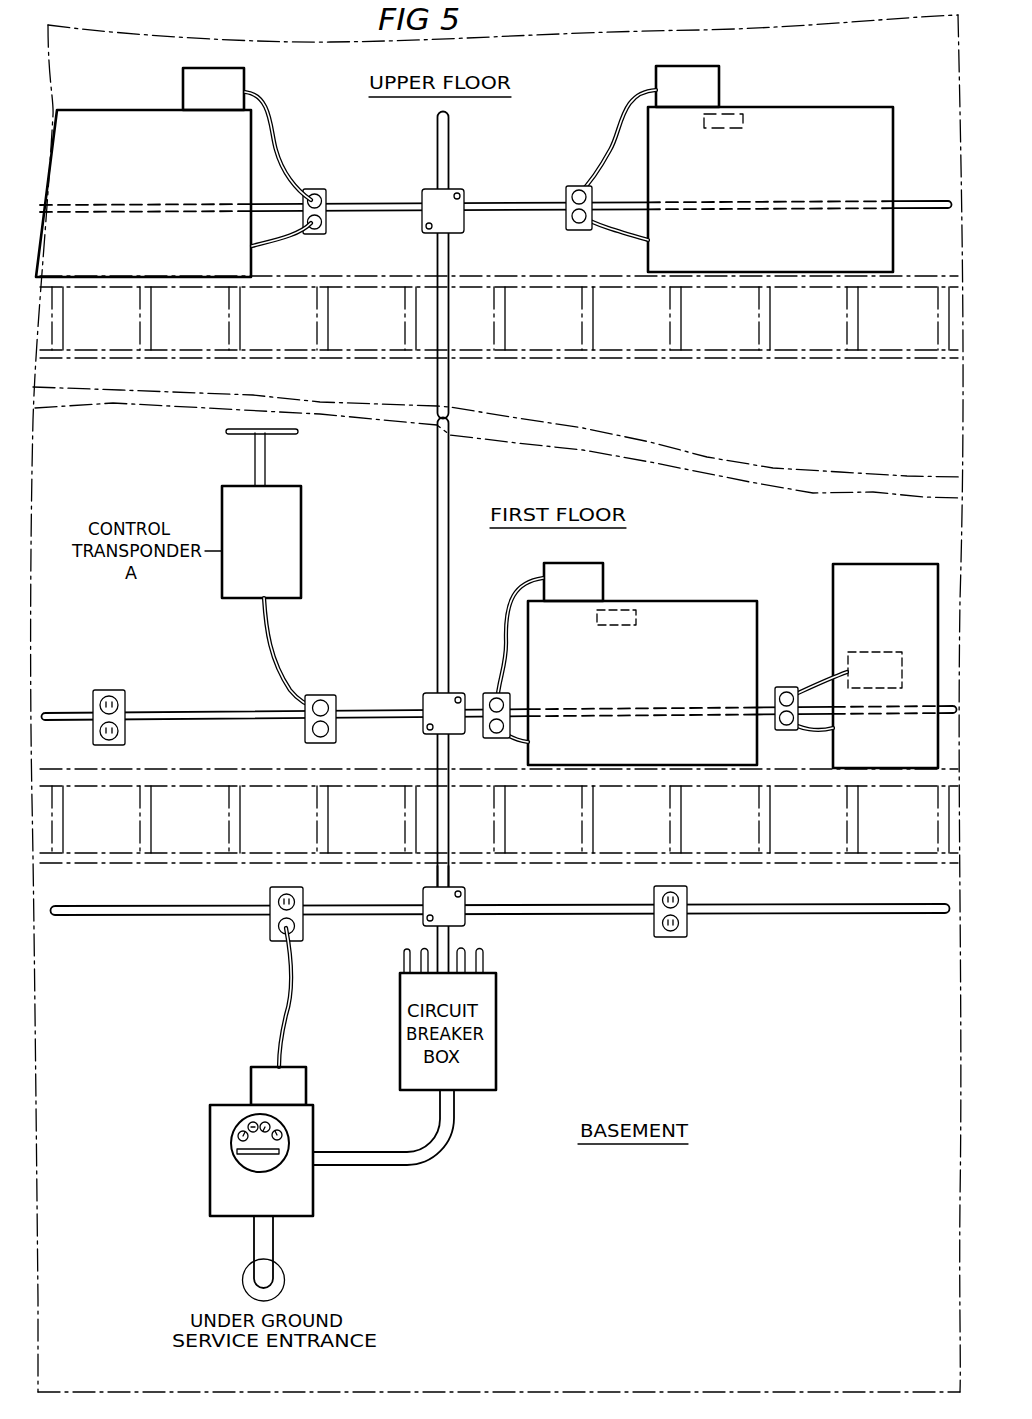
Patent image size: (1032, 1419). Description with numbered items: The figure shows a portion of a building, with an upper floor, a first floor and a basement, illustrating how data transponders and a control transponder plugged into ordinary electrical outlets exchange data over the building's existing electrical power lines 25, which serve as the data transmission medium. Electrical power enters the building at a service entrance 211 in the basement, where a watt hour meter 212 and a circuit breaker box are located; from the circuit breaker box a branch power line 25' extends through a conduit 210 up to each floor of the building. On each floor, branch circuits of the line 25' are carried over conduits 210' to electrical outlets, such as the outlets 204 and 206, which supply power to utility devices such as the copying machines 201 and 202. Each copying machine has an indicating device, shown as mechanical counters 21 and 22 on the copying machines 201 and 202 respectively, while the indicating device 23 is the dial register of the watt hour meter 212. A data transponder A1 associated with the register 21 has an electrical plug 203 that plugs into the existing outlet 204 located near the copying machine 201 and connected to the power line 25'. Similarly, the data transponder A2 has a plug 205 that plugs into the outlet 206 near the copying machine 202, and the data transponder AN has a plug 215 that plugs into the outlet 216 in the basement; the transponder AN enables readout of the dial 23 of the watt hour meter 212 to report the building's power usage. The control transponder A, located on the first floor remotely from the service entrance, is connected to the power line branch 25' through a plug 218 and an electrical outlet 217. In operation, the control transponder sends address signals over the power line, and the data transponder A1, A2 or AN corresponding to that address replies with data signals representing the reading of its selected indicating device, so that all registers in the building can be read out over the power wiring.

The conduit 210 is at (451, 543).
The conduits 210' is at (498, 558).
The electrical power lines 25 is at (408, 1133).
The branch power line 25' is at (478, 878).
The electrical plug 205 is at (577, 184).
The electrical outlet 206 is at (564, 191).
The indicating device 22 is at (724, 114).
The copying machine 202 is at (826, 105).
The data transponder A2 is at (719, 73).
The electrical plug 203 is at (490, 696).
The electrical outlet 204 is at (490, 737).
The plug 218 is at (317, 694).
The outlet 217 is at (336, 706).
The indicating device 21 is at (627, 607).
The copying machine 201 is at (714, 601).
The data transponder A1 is at (605, 568).
The electrical plug 215 is at (302, 930).
The electrical outlet 216 is at (270, 932).
The data transponder AN is at (251, 1073).
The indicating device 23 is at (231, 1143).
The watt hour meter 212 is at (313, 1196).
The service entrance 211 is at (292, 1251).